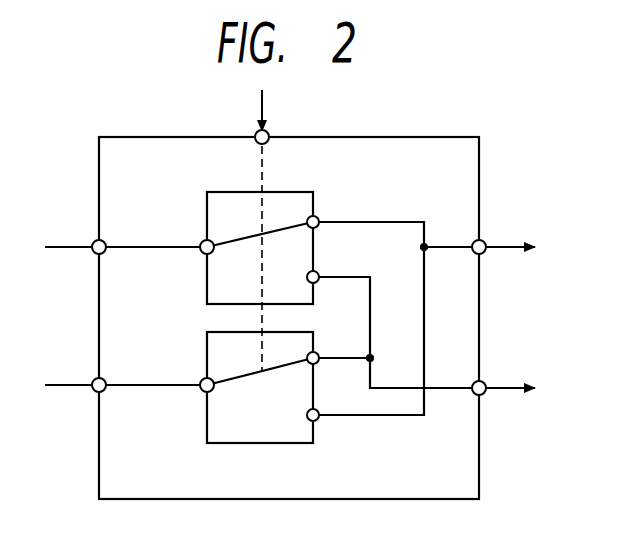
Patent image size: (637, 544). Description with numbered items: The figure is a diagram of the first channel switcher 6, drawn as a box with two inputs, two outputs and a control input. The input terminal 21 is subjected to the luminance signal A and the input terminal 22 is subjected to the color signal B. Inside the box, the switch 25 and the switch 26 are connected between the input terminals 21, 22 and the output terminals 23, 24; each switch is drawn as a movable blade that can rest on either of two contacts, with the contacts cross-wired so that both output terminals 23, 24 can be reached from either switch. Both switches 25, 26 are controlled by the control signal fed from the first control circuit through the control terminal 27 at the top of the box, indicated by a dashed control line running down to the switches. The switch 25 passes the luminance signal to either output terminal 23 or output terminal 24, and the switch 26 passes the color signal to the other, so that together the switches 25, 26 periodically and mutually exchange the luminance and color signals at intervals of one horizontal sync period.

The first channel switcher 6 is at (100, 126).
The input terminal 21 is at (94, 240).
The input terminal 22 is at (94, 378).
The output terminal 23 is at (485, 242).
The output terminal 24 is at (485, 382).
The switch 25 is at (202, 240).
The switch 26 is at (202, 378).
The control terminal 27 is at (268, 132).